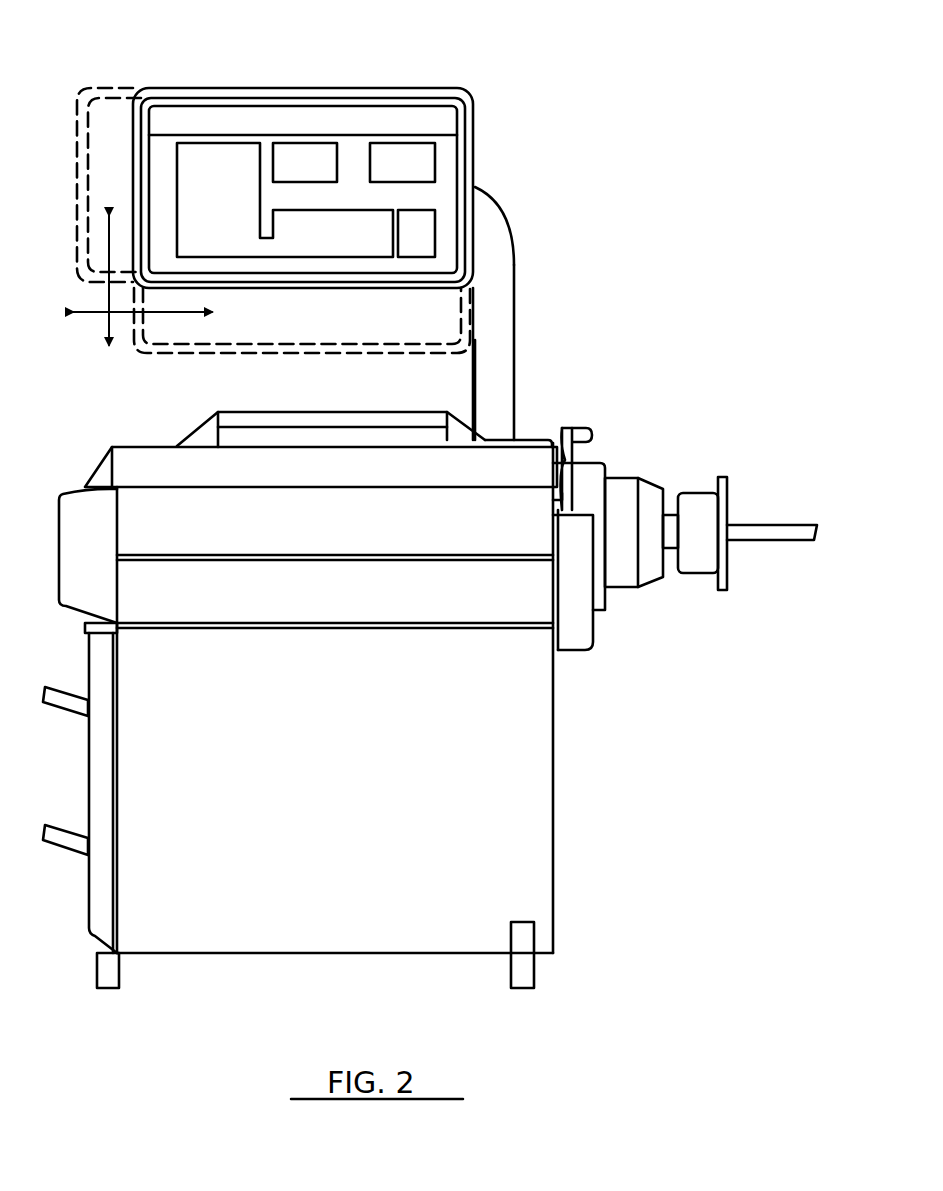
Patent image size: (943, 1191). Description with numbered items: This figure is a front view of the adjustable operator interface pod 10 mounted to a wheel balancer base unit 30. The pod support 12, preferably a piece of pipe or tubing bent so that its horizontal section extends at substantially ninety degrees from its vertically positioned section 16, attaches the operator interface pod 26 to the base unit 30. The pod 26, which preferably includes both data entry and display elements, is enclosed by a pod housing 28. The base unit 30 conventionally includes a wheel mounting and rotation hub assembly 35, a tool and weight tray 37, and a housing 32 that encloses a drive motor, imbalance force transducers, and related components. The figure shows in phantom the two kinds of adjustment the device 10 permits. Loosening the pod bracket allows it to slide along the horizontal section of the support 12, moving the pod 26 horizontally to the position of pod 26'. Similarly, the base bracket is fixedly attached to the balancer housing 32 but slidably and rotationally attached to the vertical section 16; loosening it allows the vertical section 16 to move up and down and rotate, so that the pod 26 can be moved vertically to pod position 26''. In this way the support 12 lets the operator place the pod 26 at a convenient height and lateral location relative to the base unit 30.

The adjustable operator interface pod 10 is at (542, 166).
The pod support 12 is at (500, 245).
The vertical section 16 is at (498, 367).
The operator interface pod 26 is at (361, 188).
The pod position 26' is at (117, 147).
The pod position 26'' is at (271, 315).
The pod housing 28 is at (437, 88).
The wheel balancer base unit 30 is at (537, 722).
The housing 32 is at (523, 833).
The wheel mounting and rotation hub assembly 35 is at (647, 492).
The tool and weight tray 37 is at (133, 457).